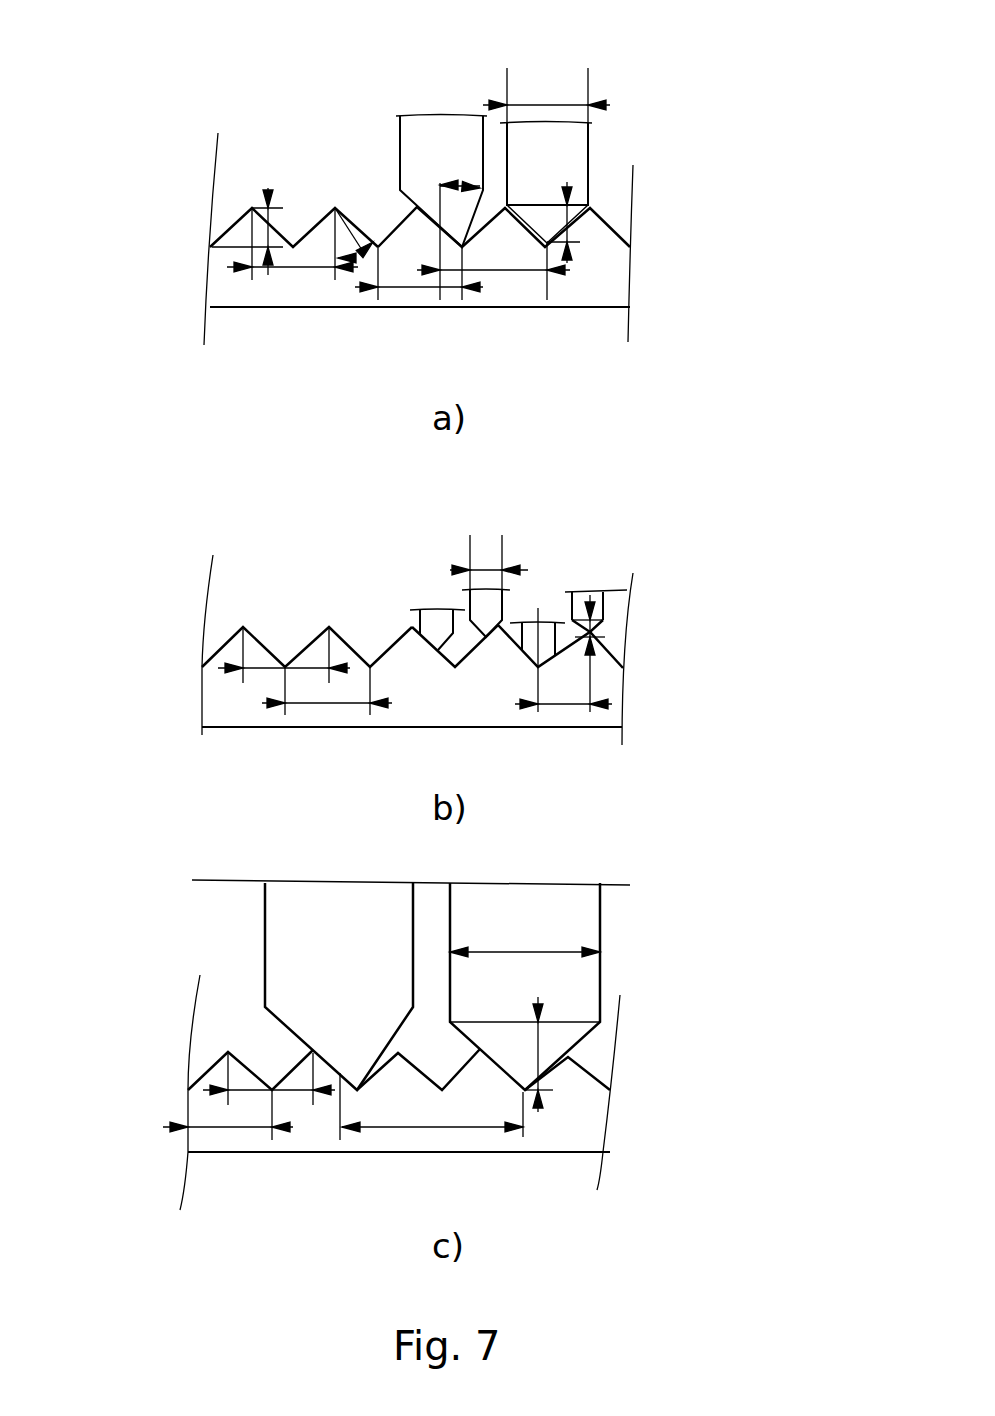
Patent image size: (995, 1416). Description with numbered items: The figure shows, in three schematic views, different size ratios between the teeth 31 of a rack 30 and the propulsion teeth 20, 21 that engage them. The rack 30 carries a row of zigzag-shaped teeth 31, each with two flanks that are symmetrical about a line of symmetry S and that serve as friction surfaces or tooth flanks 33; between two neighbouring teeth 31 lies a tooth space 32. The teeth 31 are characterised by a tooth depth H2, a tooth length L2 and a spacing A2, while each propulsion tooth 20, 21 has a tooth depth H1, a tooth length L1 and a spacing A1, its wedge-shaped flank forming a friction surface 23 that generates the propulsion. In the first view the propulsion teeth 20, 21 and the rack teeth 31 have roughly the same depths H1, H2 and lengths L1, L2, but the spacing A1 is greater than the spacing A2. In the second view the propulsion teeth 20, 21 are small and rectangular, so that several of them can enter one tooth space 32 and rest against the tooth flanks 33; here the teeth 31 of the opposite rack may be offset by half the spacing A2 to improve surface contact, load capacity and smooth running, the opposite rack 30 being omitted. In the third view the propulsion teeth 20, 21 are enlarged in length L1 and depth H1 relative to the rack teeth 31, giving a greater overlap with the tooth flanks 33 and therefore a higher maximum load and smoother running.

In FIG. 7a, the cutting tooth 20 is at (573, 123).
In FIG. 7b, the cutting tooth 20 is at (557, 573).
In FIG. 7c, the cutting tooth 20 is at (525, 986).
In FIG. 7a, the propulsion tooth 21 is at (537, 157).
In FIG. 7b, the propulsion tooth 21 is at (596, 590).
In FIG. 7c, the propulsion tooth 21 is at (313, 980).
In FIG. 7c, the friction surface 23 is at (578, 1046).
In FIG. 7a, the rack 30 is at (360, 239).
In FIG. 7b, the rack 30 is at (381, 650).
In FIG. 7c, the rack 30 is at (400, 1092).
In FIG. 7a, the tooth of the rack 31 is at (235, 222).
In FIG. 7b, the tooth of the rack 31 is at (330, 640).
In FIG. 7c, the tooth of the rack 31 is at (398, 1068).
In FIG. 7a, the tooth space 32 is at (372, 225).
In FIG. 7b, the tooth space 32 is at (363, 643).
In FIG. 7c, the tooth space 32 is at (437, 1073).
In FIG. 7b, the tooth flank 33 is at (315, 637).
In FIG. 7a, the line of symmetry S is at (440, 183).
In FIG. 7a, the tooth length of the propulsion tooth L1 is at (553, 105).
In FIG. 7b, the tooth length of the propulsion tooth L1 is at (490, 570).
In FIG. 7c, the tooth length of the propulsion tooth L1 is at (502, 952).
In FIG. 7a, the tooth length of the rack tooth L2 is at (393, 289).
In FIG. 7b, the tooth length of the rack tooth L2 is at (300, 705).
In FIG. 7c, the tooth length of the rack tooth L2 is at (203, 1128).
In FIG. 7a, the tooth depth of the propulsion tooth H1 is at (592, 207).
In FIG. 7b, the tooth depth of the propulsion tooth H1 is at (605, 626).
In FIG. 7c, the tooth depth of the propulsion tooth H1 is at (542, 1033).
In FIG. 7a, the tooth depth of the rack tooth H2 is at (283, 235).
In FIG. 7a, the distance between the propulsion teeth A1 is at (507, 272).
In FIG. 7b, the distance between the propulsion teeth A1 is at (563, 704).
In FIG. 7c, the distance between the propulsion teeth A1 is at (463, 1128).
In FIG. 7a, the distance of the rack teeth A2 is at (300, 268).
In FIG. 7b, the distance of the rack teeth A2 is at (312, 670).
In FIG. 7c, the distance of the rack teeth A2 is at (292, 1086).